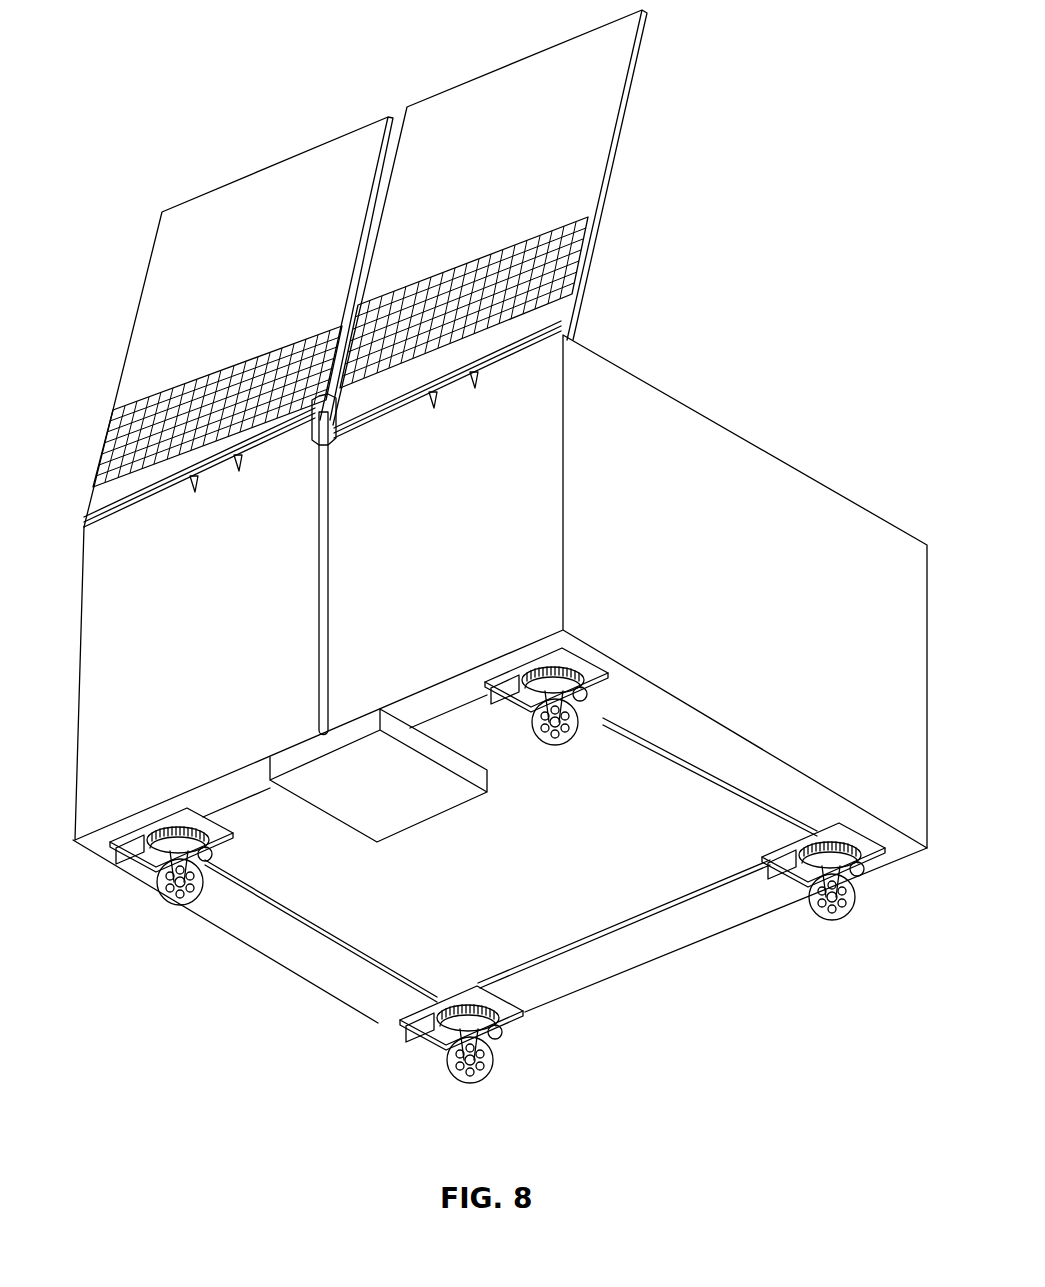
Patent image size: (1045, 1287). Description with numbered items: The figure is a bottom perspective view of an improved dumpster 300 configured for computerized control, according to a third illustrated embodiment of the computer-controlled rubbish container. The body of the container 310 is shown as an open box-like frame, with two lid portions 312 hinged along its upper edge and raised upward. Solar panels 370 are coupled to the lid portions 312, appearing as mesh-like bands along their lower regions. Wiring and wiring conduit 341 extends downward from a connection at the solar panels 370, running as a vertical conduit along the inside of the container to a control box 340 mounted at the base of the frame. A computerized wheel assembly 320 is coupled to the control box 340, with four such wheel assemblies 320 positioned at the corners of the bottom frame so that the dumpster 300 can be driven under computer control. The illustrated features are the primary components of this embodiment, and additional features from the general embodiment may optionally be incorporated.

The dumpster 300 is at (868, 405).
The frame / container body 310 is at (802, 595).
The lid portions 312 is at (276, 273).
The computerized wheel assembly 320 is at (590, 668).
The control box 340 is at (392, 800).
The wiring and wiring conduit 341 is at (320, 625).
The solar panels 370 is at (110, 442).